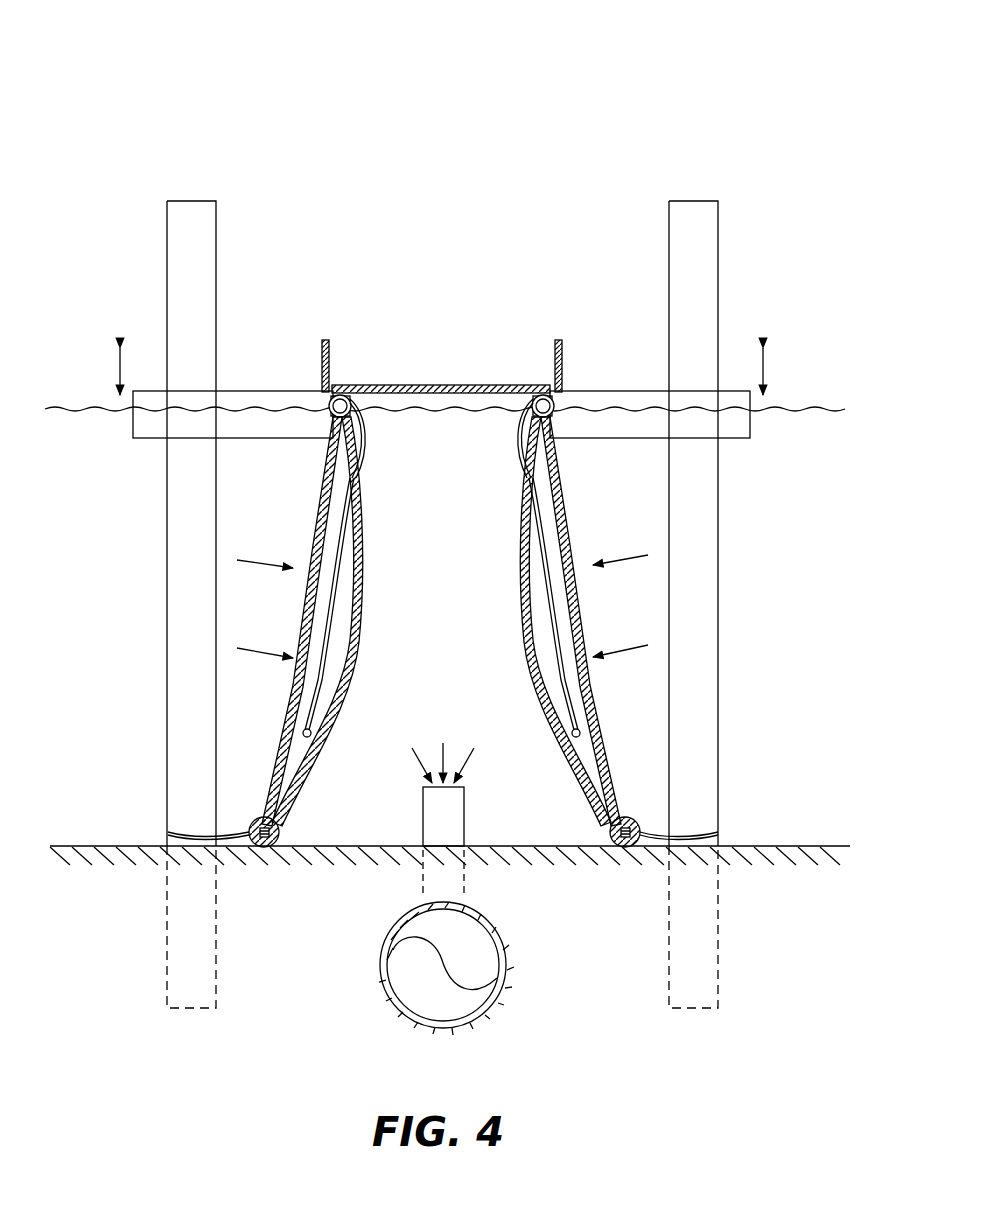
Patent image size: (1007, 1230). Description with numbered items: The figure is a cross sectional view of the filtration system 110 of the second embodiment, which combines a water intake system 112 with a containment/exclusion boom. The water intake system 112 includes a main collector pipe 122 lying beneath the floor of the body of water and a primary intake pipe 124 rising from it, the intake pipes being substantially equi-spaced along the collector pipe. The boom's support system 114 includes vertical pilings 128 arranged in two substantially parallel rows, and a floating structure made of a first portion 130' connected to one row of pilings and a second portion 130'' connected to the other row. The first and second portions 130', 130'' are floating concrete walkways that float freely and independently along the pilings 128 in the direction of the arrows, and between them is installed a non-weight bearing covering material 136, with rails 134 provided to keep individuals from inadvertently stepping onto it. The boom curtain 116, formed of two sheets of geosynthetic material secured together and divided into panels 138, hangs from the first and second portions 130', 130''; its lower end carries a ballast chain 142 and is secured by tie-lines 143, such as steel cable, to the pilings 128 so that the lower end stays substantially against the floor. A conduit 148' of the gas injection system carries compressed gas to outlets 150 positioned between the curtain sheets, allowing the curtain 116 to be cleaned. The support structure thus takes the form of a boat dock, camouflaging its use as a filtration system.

The filtration system 110 is at (484, 86).
The water intake system 112 is at (343, 968).
The support system 114 is at (491, 571).
The boom curtain 116 is at (510, 572).
The main collector pipe 122 is at (505, 966).
The primary intake pipes 124 is at (422, 800).
The vertical pilings 128 is at (206, 251).
The first portion of the floating structure 130' is at (226, 376).
The second portion of the floating structure 130'' is at (665, 374).
The rails 134 is at (326, 340).
The covering material 136 is at (432, 385).
The panels 138 is at (270, 845).
The ballast chain 142 is at (262, 822).
The tie-lines 143 is at (168, 834).
The conduit 148' is at (441, 373).
The outlets 150 is at (302, 733).